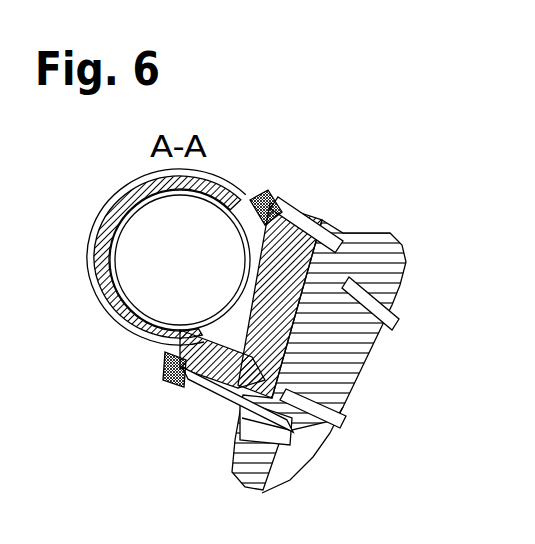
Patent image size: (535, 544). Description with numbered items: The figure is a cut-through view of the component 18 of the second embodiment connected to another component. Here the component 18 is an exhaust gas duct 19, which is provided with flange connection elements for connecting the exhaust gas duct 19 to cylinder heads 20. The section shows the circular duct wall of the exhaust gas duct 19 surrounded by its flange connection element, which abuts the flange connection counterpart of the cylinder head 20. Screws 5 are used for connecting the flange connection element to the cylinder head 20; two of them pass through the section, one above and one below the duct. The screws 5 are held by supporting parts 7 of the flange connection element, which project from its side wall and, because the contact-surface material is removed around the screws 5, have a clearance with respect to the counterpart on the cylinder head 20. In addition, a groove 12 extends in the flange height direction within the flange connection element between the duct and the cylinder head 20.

The screws 5 is at (319, 236).
The supporting parts 7 is at (289, 203).
The groove 12 is at (316, 270).
The component 18 is at (106, 213).
The exhaust gas duct 19 is at (150, 268).
The cylinder head 20 is at (365, 352).